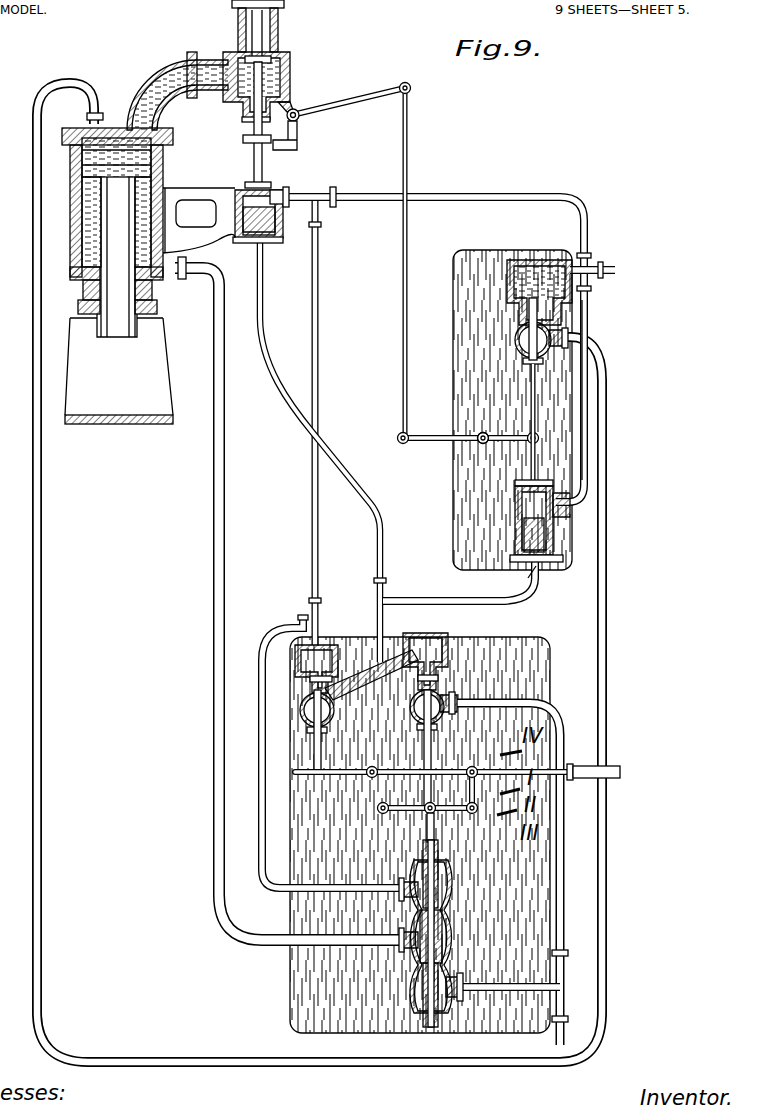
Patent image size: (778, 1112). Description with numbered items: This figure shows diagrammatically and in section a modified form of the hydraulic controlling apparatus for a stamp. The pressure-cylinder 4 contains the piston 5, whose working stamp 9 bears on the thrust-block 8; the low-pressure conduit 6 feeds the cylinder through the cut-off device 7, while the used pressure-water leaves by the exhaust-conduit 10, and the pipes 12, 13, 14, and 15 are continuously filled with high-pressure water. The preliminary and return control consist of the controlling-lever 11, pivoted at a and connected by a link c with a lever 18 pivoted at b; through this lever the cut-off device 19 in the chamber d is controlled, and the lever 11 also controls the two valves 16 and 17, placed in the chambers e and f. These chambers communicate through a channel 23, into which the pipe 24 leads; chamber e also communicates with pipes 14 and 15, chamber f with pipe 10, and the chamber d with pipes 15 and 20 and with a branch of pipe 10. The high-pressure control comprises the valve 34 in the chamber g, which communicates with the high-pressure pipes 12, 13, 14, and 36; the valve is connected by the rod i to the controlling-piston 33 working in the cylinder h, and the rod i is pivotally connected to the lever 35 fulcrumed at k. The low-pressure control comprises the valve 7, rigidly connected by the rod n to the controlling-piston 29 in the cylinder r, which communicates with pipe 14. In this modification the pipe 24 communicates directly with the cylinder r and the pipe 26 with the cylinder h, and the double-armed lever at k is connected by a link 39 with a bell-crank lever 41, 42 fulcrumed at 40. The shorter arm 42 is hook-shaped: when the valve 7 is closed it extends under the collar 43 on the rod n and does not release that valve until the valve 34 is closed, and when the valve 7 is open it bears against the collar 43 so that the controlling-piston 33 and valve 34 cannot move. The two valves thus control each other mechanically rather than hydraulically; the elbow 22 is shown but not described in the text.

The pressure-cylinder 4 is at (70, 180).
The piston 5 is at (126, 150).
The low-pressure conduit 6 is at (258, 28).
The cut-off device 7 is at (280, 38).
The thrust-block 8 is at (116, 404).
The working stamp 9 is at (117, 257).
The exhaust-conduit 10 is at (563, 802).
The controlling-lever 11 is at (562, 738).
The high-pressure conduit 12 is at (604, 262).
The high-pressure pipe 13 is at (590, 292).
The high-pressure pipe 14 is at (470, 195).
The high-pressure pipe 15 is at (276, 626).
The valve 16 is at (308, 684).
The valve 17 is at (425, 661).
The lever 18 is at (406, 812).
The cut-off device 19 is at (446, 846).
The pipe 20 is at (226, 450).
The elbow pipe 22 is at (108, 122).
The channel 23 is at (358, 660).
The pipe 24 is at (384, 520).
The pipe 26 is at (410, 612).
The controlling-piston 29 is at (248, 248).
The controlling-piston 33 is at (515, 565).
The valve 34 is at (539, 312).
The lever 35 is at (430, 445).
The high-pressure pipe 36 is at (44, 466).
The link 39 is at (402, 255).
The fulcrum 40 is at (297, 108).
The bell-crank lever arm 41 is at (358, 105).
The hook-shaped arm 42 is at (297, 145).
The collar 43 is at (243, 139).
The pivot a is at (372, 778).
The pivot b is at (380, 814).
The link c is at (478, 784).
The chamber d is at (452, 925).
The valve-chamber e is at (300, 725).
The valve-chamber f is at (445, 668).
The chamber g is at (520, 260).
The cylinder h is at (556, 535).
The rod i is at (578, 412).
The fulcrum k is at (486, 433).
The valve-rod n is at (254, 150).
The cylinder r is at (278, 222).